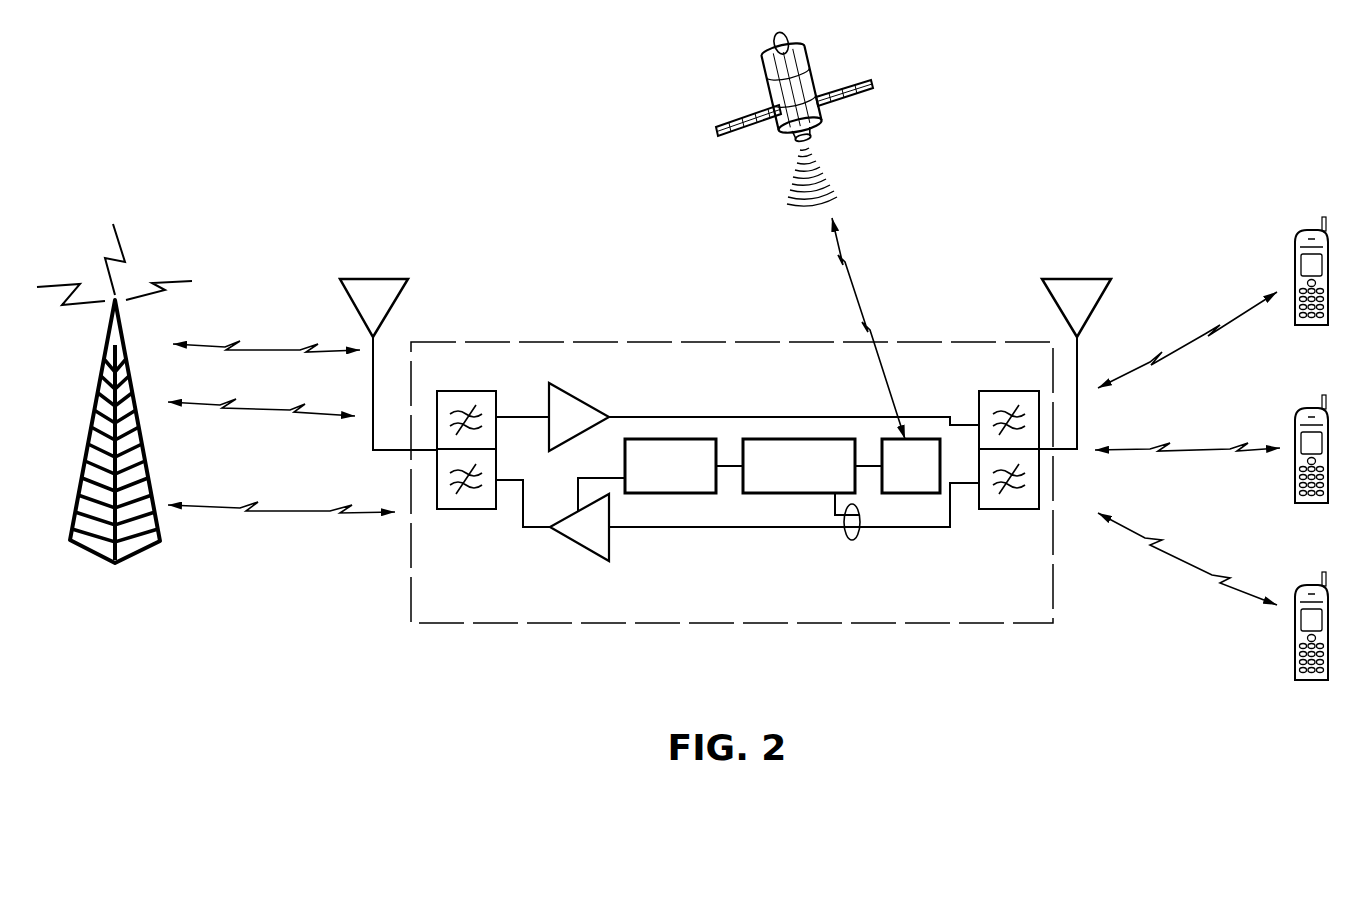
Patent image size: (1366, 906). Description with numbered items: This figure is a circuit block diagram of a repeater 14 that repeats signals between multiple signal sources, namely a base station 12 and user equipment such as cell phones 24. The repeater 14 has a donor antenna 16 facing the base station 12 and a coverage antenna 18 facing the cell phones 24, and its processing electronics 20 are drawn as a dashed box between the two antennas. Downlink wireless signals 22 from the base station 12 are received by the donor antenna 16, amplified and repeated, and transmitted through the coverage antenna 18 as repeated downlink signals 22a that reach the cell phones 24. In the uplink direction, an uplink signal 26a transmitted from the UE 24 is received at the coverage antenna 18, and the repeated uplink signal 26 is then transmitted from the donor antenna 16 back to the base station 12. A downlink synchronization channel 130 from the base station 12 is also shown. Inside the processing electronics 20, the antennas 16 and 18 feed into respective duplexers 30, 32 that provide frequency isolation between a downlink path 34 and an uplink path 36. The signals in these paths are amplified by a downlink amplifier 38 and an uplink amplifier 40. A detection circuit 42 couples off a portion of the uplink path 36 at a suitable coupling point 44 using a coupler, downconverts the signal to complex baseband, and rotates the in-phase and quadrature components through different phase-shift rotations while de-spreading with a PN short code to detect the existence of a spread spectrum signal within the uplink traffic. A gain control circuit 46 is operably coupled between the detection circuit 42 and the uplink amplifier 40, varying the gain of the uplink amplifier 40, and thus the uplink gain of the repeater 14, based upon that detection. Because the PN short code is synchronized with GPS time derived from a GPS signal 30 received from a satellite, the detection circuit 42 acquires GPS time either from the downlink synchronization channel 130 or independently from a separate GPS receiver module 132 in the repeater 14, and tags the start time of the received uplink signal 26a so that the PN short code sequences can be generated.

The base station 12 is at (130, 362).
The repeater 14 is at (690, 281).
The donor antenna 16 is at (410, 280).
The coverage antenna 18 is at (1082, 279).
The processing electronics 20 is at (528, 341).
The downlink wireless signals 22 is at (277, 416).
The repeated downlink signals 22a is at (1205, 330).
The cell phones 24 is at (1327, 273).
The repeated uplink signal 26 is at (277, 345).
The uplink signal 26a is at (1175, 449).
The duplexer 30 is at (480, 391).
The duplexer 32 is at (1010, 391).
The downlink path 34 is at (795, 417).
The uplink path 36 is at (948, 530).
The downlink amplifier 38 is at (583, 390).
The uplink amplifier 40 is at (615, 545).
The detection circuit 42 is at (790, 493).
The coupling point 44 is at (858, 540).
The gain control circuit 46 is at (668, 493).
The downlink synchronization channel 130 is at (300, 512).
The GPS receiver module 132 is at (892, 493).